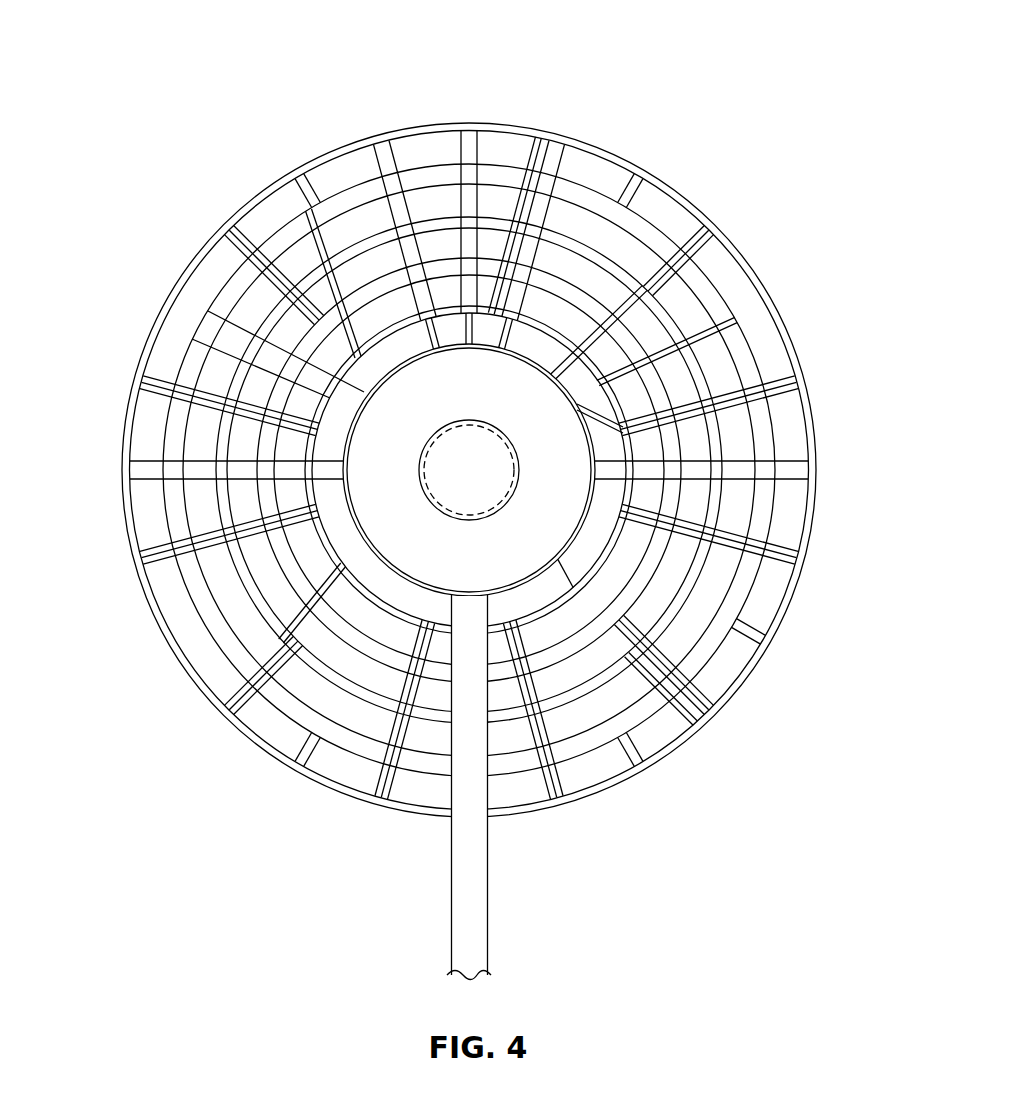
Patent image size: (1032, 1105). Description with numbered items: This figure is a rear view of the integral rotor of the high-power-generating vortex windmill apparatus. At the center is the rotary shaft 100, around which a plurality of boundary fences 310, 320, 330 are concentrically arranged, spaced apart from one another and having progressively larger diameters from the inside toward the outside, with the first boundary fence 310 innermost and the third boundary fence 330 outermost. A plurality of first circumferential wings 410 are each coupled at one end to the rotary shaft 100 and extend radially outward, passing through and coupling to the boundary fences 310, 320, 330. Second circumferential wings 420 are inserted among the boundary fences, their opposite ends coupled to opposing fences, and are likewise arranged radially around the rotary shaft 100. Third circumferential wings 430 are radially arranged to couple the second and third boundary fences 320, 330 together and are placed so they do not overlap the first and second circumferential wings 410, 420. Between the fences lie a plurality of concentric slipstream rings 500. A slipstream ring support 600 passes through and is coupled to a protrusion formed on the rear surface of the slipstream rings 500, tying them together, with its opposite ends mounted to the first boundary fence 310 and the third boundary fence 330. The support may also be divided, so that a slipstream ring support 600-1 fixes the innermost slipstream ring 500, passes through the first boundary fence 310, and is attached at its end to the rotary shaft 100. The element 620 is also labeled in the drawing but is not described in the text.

The rotary shaft 100 is at (447, 498).
The first boundary fence 310 is at (210, 508).
The second boundary fence 320 is at (235, 652).
The third boundary fence 330 is at (340, 808).
The first circumferential wing 410 is at (335, 212).
The second circumferential wing 420 is at (478, 150).
The third circumferential wing 430 is at (399, 150).
The slipstream ring 500 is at (745, 573).
The slipstream ring support 600 is at (577, 227).
The slipstream ring support 600-1 is at (572, 580).
The auxiliary strut 620 is at (527, 160).